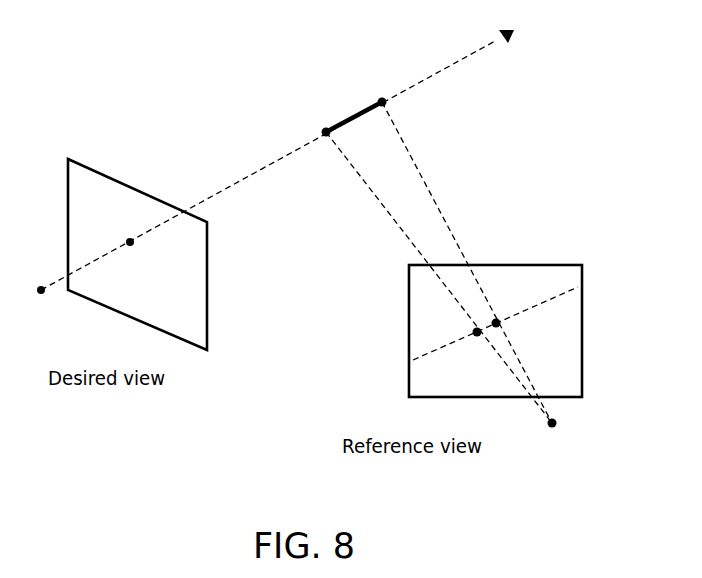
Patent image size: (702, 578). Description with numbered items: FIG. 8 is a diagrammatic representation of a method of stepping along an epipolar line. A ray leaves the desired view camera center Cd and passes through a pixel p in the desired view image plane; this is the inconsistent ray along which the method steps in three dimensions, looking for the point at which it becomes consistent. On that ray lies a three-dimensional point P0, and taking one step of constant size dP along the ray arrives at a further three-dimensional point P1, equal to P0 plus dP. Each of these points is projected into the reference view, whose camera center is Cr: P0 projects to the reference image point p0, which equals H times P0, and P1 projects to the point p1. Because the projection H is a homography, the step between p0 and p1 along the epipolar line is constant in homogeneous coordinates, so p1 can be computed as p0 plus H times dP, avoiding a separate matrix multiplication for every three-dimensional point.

The desired view camera center Cd is at (40, 314).
The pixel in desired view p is at (121, 231).
The 3D point on the ray P0 is at (323, 150).
The 3D point on the ray after a step P1 is at (400, 112).
The step along the ray dP is at (354, 109).
The projection of P0 in the reference view p0 is at (474, 346).
The projection of P1 in the reference view p1 is at (512, 327).
The reference view camera center Cr is at (555, 447).